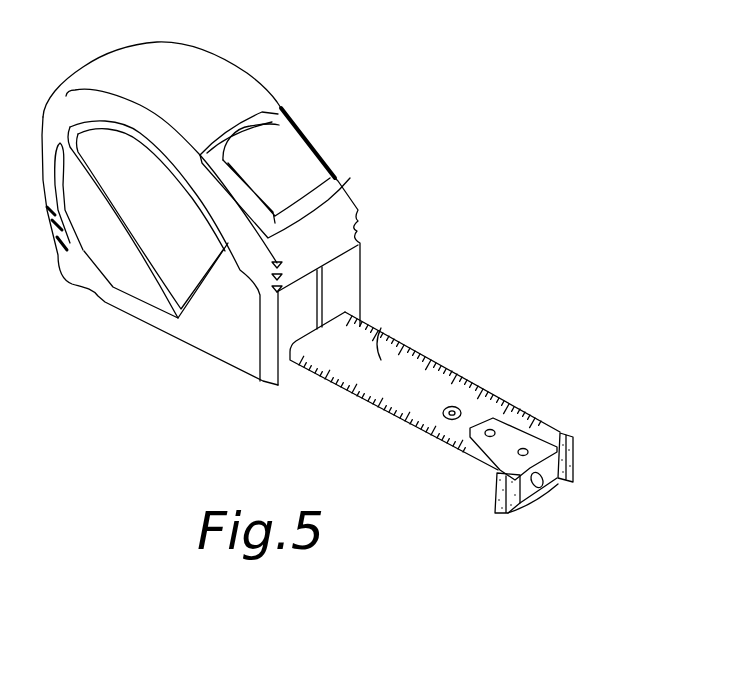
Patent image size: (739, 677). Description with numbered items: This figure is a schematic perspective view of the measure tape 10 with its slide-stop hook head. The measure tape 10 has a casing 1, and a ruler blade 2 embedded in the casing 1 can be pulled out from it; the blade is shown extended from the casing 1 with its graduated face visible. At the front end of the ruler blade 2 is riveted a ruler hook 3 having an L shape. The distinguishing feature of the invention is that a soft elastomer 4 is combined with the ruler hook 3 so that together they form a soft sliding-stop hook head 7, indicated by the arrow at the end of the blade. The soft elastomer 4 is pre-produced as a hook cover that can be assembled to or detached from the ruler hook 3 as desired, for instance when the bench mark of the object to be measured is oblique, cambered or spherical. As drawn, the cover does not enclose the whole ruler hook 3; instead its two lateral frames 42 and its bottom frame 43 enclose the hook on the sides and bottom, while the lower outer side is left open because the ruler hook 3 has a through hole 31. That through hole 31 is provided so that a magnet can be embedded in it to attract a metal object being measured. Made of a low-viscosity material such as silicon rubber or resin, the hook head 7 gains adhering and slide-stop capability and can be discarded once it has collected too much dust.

The casing 1 is at (246, 88).
The ruler blade 2 is at (372, 341).
The ruler hook 3 is at (507, 433).
The soft elastomer 4 is at (544, 474).
The soft sliding-stop hook head 7 is at (581, 402).
The measure tape 10 is at (463, 168).
The through hole 31 is at (550, 482).
The lateral frames 42 is at (576, 450).
The bottom frame 43 is at (532, 503).